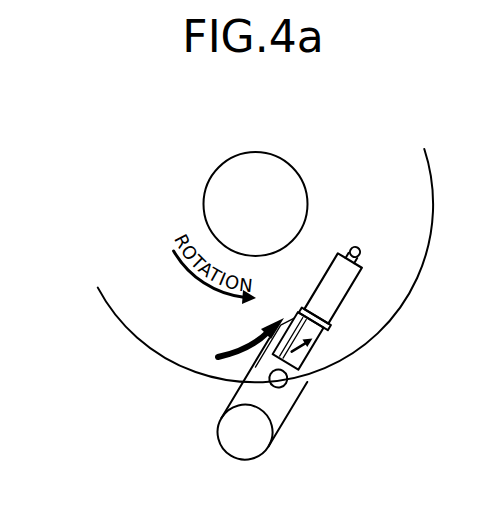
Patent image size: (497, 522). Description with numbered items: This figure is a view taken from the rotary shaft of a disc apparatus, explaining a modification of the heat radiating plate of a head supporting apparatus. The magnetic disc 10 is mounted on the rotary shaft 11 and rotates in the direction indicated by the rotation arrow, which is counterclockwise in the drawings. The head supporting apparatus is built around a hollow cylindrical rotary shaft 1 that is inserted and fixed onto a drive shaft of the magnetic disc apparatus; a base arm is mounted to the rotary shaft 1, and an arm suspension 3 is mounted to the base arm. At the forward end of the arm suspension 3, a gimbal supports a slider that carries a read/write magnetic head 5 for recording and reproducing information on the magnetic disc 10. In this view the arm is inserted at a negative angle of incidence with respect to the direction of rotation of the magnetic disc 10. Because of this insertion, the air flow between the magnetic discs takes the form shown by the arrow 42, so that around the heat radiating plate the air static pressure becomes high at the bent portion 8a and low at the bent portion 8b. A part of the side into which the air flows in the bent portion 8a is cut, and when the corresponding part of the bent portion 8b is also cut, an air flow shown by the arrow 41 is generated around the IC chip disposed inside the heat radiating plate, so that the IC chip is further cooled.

The rotary shaft 1 is at (246, 447).
The arm suspension 3 is at (337, 289).
The magnetic head 5 is at (358, 247).
The bent portion of the heat radiating plate 8a is at (262, 373).
The bent portion of the heat radiating plate 8b is at (310, 347).
The magnetic disc 10 is at (124, 330).
The rotary shaft 11 is at (243, 176).
The arrow 41 is at (298, 373).
The arrow 42 is at (242, 357).